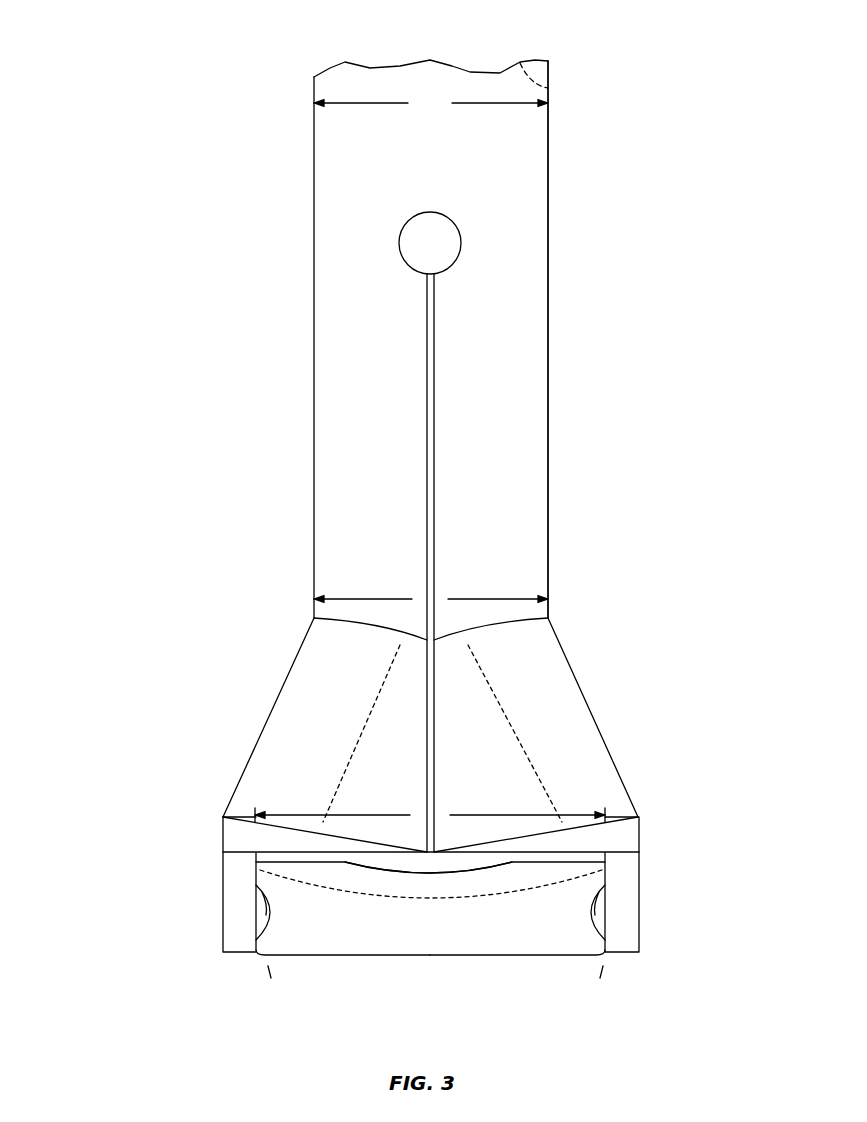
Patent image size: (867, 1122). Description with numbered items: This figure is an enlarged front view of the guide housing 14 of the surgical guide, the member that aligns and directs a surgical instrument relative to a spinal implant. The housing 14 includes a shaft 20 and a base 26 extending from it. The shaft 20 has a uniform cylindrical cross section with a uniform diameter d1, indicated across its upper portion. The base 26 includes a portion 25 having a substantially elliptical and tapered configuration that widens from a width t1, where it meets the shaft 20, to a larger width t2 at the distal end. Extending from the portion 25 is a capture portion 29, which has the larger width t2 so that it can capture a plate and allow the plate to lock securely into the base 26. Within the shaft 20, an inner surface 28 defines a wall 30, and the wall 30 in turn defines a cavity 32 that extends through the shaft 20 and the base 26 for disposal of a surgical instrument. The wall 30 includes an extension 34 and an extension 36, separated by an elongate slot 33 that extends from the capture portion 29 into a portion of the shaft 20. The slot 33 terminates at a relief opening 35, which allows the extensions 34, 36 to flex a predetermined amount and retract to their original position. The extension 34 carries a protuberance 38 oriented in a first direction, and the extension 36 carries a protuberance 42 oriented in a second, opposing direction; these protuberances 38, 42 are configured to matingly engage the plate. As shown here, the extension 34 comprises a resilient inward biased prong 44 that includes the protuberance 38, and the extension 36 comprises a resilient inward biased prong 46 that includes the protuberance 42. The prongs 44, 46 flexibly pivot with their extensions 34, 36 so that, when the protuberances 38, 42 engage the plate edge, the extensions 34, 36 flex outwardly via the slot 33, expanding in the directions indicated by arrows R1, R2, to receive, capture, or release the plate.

The guide housing 14 is at (188, 411).
The shaft 20 is at (515, 270).
The portion 25 is at (558, 678).
The base 26 is at (137, 916).
The inner surface 28 is at (520, 60).
The capture portion 29 is at (727, 900).
The wall 30 is at (550, 90).
The cavity 32 is at (360, 52).
The slot 33 is at (435, 397).
The extension 34 is at (223, 897).
The opening 35 is at (447, 215).
The extension 36 is at (640, 893).
The protuberance 38 is at (257, 888).
The protuberance 42 is at (605, 882).
The prong 44 is at (235, 946).
The prong 46 is at (630, 940).
The expansion direction arrow R1 is at (270, 968).
The expansion direction arrow R2 is at (600, 970).
The diameter d1 is at (431, 103).
The width t1 is at (431, 599).
The width t2 is at (430, 814).